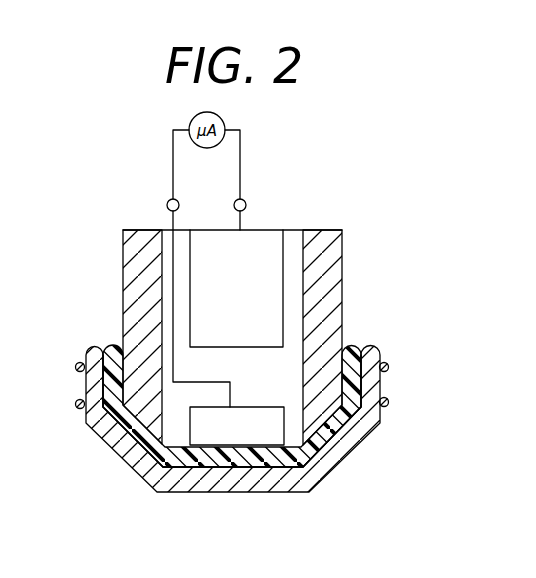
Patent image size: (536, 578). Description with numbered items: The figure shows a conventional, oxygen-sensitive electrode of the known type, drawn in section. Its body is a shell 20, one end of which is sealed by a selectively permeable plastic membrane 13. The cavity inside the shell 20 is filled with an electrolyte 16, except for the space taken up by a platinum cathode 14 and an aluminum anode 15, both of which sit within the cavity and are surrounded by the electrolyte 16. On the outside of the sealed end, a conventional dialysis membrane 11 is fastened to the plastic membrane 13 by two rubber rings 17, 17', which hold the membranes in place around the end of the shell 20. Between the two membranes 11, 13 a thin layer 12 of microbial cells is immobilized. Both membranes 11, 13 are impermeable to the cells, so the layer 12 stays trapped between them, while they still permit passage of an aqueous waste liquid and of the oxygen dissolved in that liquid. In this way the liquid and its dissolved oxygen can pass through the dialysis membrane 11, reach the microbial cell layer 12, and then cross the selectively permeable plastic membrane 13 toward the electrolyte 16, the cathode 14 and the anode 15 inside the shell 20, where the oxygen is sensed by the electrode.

The dialysis membrane 11 is at (172, 486).
The thin layer of microbial cells 12 is at (237, 468).
The selectively permeable plastic membrane 13 is at (283, 458).
The platinum cathode 14 is at (257, 418).
The aluminum anode 15 is at (260, 242).
The electrolyte 16 is at (247, 378).
The rubber ring 17 is at (257, 363).
The rubber ring 17' is at (262, 401).
The shell 20 is at (343, 263).